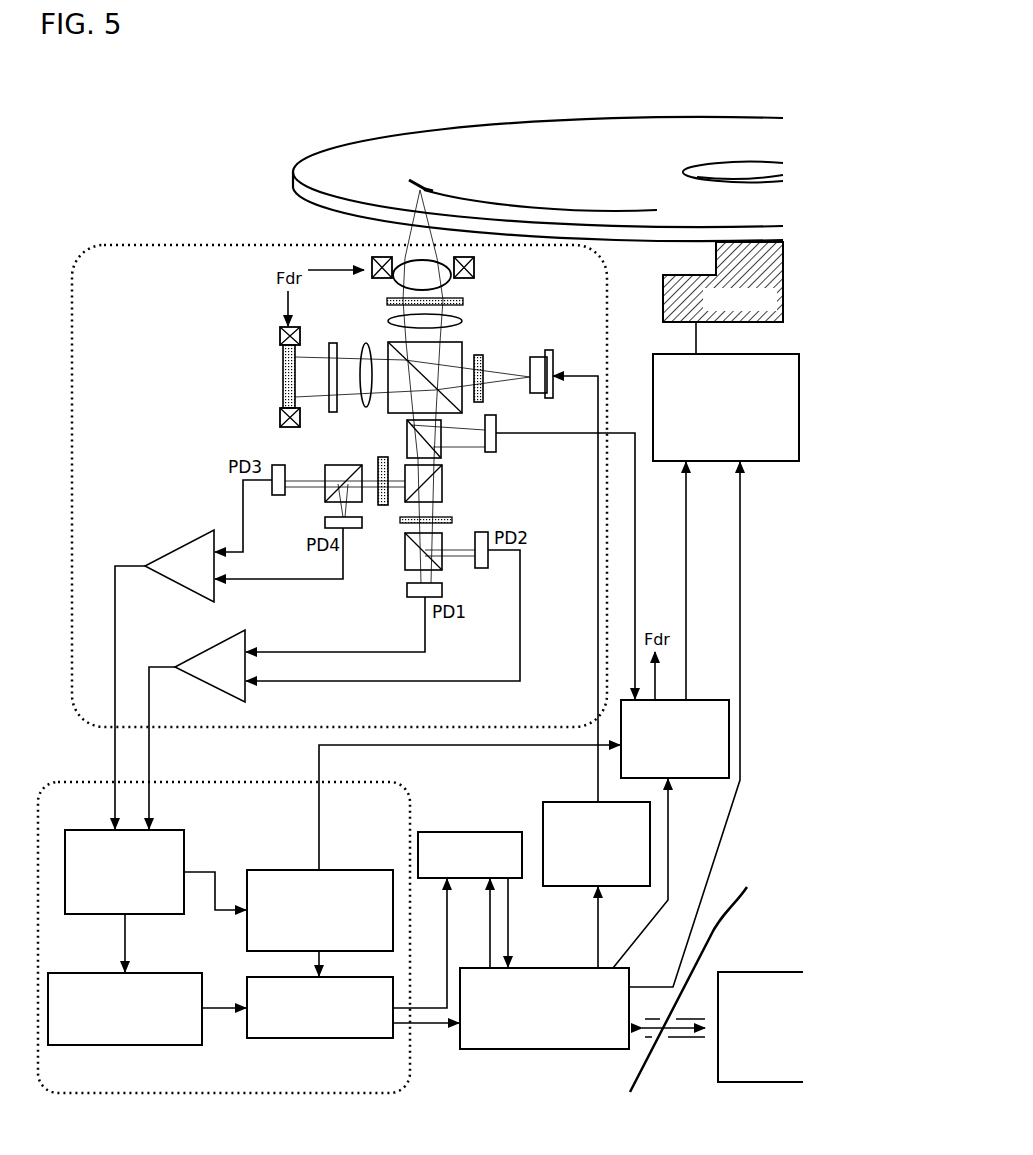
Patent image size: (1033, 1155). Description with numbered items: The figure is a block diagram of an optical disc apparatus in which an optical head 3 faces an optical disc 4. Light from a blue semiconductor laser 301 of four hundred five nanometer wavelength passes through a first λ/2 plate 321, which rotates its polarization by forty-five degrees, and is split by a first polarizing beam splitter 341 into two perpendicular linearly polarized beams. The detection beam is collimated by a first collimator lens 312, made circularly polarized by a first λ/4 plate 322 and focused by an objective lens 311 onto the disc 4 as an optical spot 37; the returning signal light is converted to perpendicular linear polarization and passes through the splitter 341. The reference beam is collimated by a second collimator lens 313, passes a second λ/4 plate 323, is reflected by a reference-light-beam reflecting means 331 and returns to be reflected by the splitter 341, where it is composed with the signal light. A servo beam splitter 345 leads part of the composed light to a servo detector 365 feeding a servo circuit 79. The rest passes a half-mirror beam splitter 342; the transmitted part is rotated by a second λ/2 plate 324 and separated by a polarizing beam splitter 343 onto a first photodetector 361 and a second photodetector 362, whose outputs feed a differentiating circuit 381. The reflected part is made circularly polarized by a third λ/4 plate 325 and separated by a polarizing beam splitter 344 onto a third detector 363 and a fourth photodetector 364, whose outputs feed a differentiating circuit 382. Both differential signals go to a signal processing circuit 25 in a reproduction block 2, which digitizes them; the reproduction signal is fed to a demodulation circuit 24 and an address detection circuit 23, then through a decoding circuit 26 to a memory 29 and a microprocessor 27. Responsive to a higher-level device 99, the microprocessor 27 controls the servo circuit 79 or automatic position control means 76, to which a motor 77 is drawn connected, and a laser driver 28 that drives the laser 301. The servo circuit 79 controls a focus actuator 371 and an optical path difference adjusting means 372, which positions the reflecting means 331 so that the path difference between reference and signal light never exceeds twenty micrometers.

The reproduction block 2 is at (214, 781).
The optical head 3 is at (186, 245).
The optical disc 4 is at (588, 170).
The optical spot 37 is at (425, 186).
The focus actuator 371 is at (372, 262).
The optical path difference adjusting means 372 is at (280, 336).
The objective lens 311 is at (468, 281).
The first collimator lens 312 is at (465, 322).
The second collimator lens 313 is at (366, 343).
The first λ/2 plate 321 is at (484, 392).
The first λ/4 plate 322 is at (466, 303).
The second λ/4 plate 323 is at (333, 343).
The second λ/2 plate 324 is at (453, 520).
The third λ/4 plate 325 is at (382, 457).
The reference-light-beam reflecting means 331 is at (283, 380).
The first polarizing beam splitter 341 is at (466, 346).
The beam splitter 342 is at (443, 484).
The polarizing beam splitter 343 is at (405, 564).
The polarizing beam splitter 344 is at (327, 466).
The servo beam splitter 345 is at (442, 452).
The blue semiconductor laser 301 is at (553, 364).
The first photodetector 361 is at (410, 597).
The second photodetector 362 is at (484, 569).
The third detector 363 is at (278, 465).
The fourth photodetector 364 is at (325, 523).
The servo detector 365 is at (497, 449).
The differentiating circuit 381 is at (202, 650).
The differentiating circuit 382 is at (175, 550).
The address detection circuit 23 is at (350, 869).
The demodulation circuit 24 is at (184, 1046).
The signal processing circuit 25 is at (176, 915).
The decoding circuit 26 is at (326, 1039).
The microprocessor 27 is at (524, 1050).
The laser driver 28 is at (576, 887).
The memory 29 is at (436, 831).
The automatic position control means 76 is at (767, 462).
The motor 77 is at (663, 304).
The servo circuit 79 is at (706, 779).
The higher-level device 99 is at (756, 971).